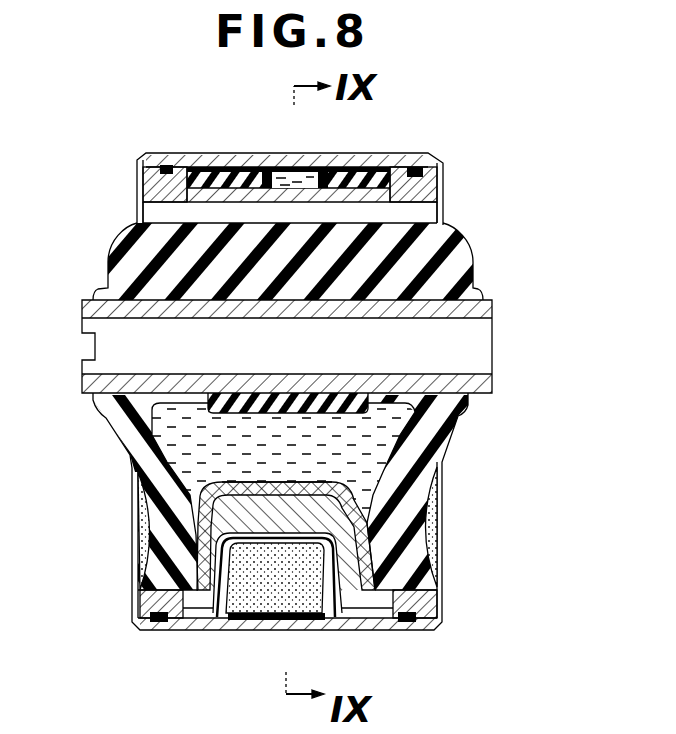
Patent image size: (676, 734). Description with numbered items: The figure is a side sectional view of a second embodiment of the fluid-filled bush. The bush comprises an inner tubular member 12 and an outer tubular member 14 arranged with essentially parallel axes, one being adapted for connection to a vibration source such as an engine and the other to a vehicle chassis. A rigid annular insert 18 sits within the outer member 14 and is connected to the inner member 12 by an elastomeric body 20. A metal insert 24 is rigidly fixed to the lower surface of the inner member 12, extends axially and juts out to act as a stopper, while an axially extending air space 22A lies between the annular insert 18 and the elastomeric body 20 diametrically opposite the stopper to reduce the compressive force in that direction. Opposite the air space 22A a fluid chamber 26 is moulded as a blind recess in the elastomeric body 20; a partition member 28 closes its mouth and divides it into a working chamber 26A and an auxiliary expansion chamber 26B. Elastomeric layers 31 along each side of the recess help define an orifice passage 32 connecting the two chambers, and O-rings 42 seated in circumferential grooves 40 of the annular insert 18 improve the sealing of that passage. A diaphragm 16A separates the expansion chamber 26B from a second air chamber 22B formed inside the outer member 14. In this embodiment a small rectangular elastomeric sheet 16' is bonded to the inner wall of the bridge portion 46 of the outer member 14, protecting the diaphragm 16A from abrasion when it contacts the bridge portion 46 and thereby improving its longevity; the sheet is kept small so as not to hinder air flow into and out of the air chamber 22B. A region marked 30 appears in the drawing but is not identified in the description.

The inner tubular member 12 is at (493, 315).
The outer tubular member 14 is at (378, 156).
The diaphragm 16A is at (276, 577).
The elastomeric sheet 16' is at (282, 647).
The annular insert 18 is at (153, 182).
The elastomeric body 20 is at (468, 252).
The air space 22A is at (437, 218).
The second air chamber 22B is at (313, 583).
The metal insert 24 is at (313, 394).
The fluid chamber 26 is at (178, 433).
The working chamber 26A is at (272, 470).
The auxiliary expansion chamber 26B is at (295, 526).
The partition member 28 is at (343, 485).
The slit 30 is at (300, 183).
The elastomeric layers 31 is at (224, 167).
The orifice passage 32 is at (287, 167).
The circumferential grooves 40 is at (161, 623).
The O-rings 42 is at (170, 165).
The bridge portion 46 is at (270, 633).